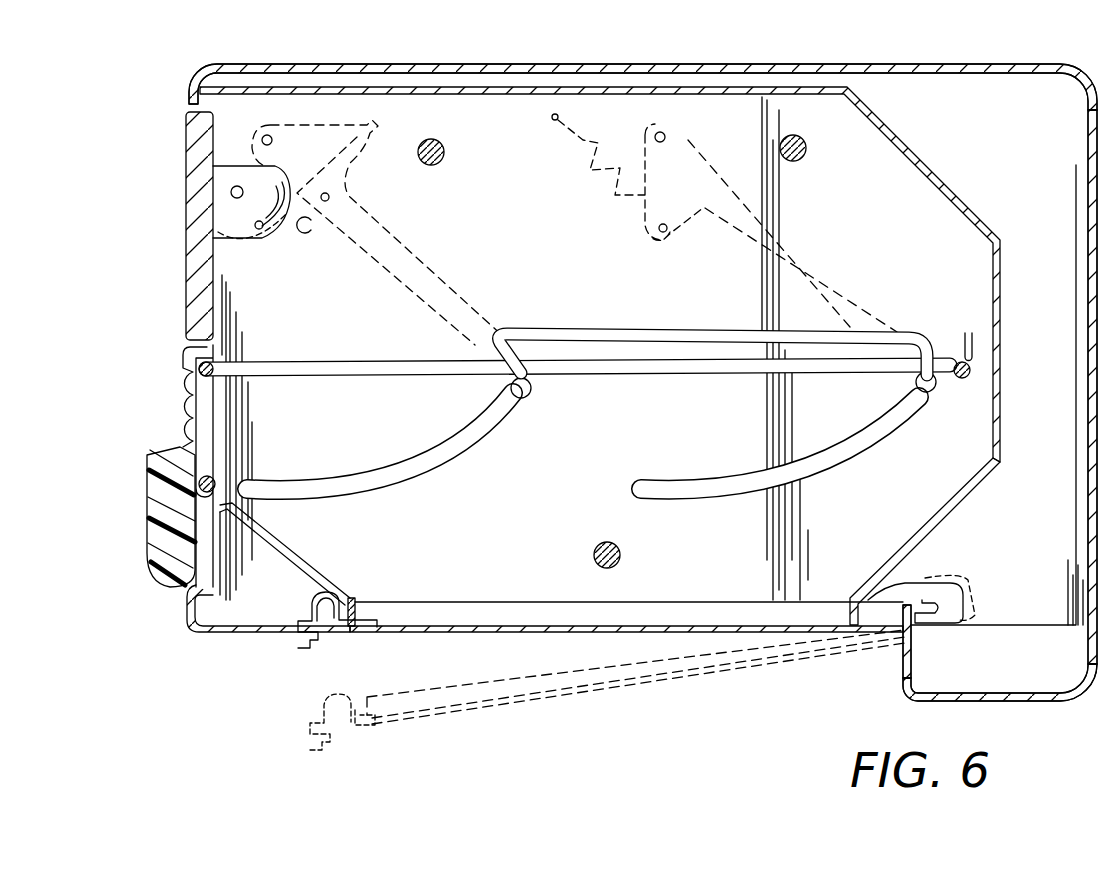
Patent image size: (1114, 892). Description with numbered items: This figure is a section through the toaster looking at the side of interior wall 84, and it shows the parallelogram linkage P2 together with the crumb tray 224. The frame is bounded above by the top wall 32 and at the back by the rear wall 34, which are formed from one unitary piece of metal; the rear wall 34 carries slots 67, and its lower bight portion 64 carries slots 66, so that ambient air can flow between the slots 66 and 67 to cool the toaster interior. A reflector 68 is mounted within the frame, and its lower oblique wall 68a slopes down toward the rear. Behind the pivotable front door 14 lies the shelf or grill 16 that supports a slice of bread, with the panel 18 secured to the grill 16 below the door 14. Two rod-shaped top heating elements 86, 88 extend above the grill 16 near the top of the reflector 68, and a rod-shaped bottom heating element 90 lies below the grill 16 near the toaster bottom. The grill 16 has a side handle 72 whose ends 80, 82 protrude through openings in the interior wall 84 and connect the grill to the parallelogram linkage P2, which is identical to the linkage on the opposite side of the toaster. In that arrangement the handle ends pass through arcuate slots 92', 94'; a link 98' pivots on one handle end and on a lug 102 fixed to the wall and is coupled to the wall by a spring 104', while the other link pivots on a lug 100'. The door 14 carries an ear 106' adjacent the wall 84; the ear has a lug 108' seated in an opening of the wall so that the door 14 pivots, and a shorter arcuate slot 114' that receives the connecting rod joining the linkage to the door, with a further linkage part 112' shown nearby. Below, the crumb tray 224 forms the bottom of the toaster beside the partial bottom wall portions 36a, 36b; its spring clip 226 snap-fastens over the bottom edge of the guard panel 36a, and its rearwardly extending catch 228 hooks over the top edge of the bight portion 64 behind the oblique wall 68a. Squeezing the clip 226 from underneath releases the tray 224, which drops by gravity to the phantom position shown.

The parallelogram linkage P2 is at (505, 122).
The top wall 32 is at (957, 73).
The slots 67 is at (1088, 260).
The rear wall 34 is at (1088, 283).
The lower bight portion 64 is at (1030, 702).
The slots 66 is at (912, 662).
The reflector 68 is at (900, 138).
The lower oblique wall 68a is at (953, 503).
The front door 14 is at (190, 252).
The panel 18 is at (160, 462).
The shelf or grill 16 is at (405, 360).
The side handle 72 is at (703, 328).
The end of handle 80 is at (538, 385).
The end of handle 82 is at (929, 392).
The interior wall 84 is at (598, 458).
The top heating element 86 is at (445, 155).
The top heating element 88 is at (808, 153).
The bottom heating element 90 is at (622, 560).
The arcuate slot 92' is at (380, 441).
The arcuate slot 94' is at (780, 462).
The link 98' is at (804, 236).
The lug 100' is at (378, 219).
The lug 102 is at (668, 137).
The spring 104' is at (616, 177).
The ear 106' is at (261, 129).
The lug 108' is at (204, 199).
The pin 112' is at (333, 256).
The arcuate slot 114' is at (195, 210).
The guard panel 36a is at (245, 633).
The inclined bottom wall 36b is at (300, 550).
The crumb tray 224 is at (548, 625).
The spring clip 226 is at (307, 612).
The catch 228 is at (966, 596).